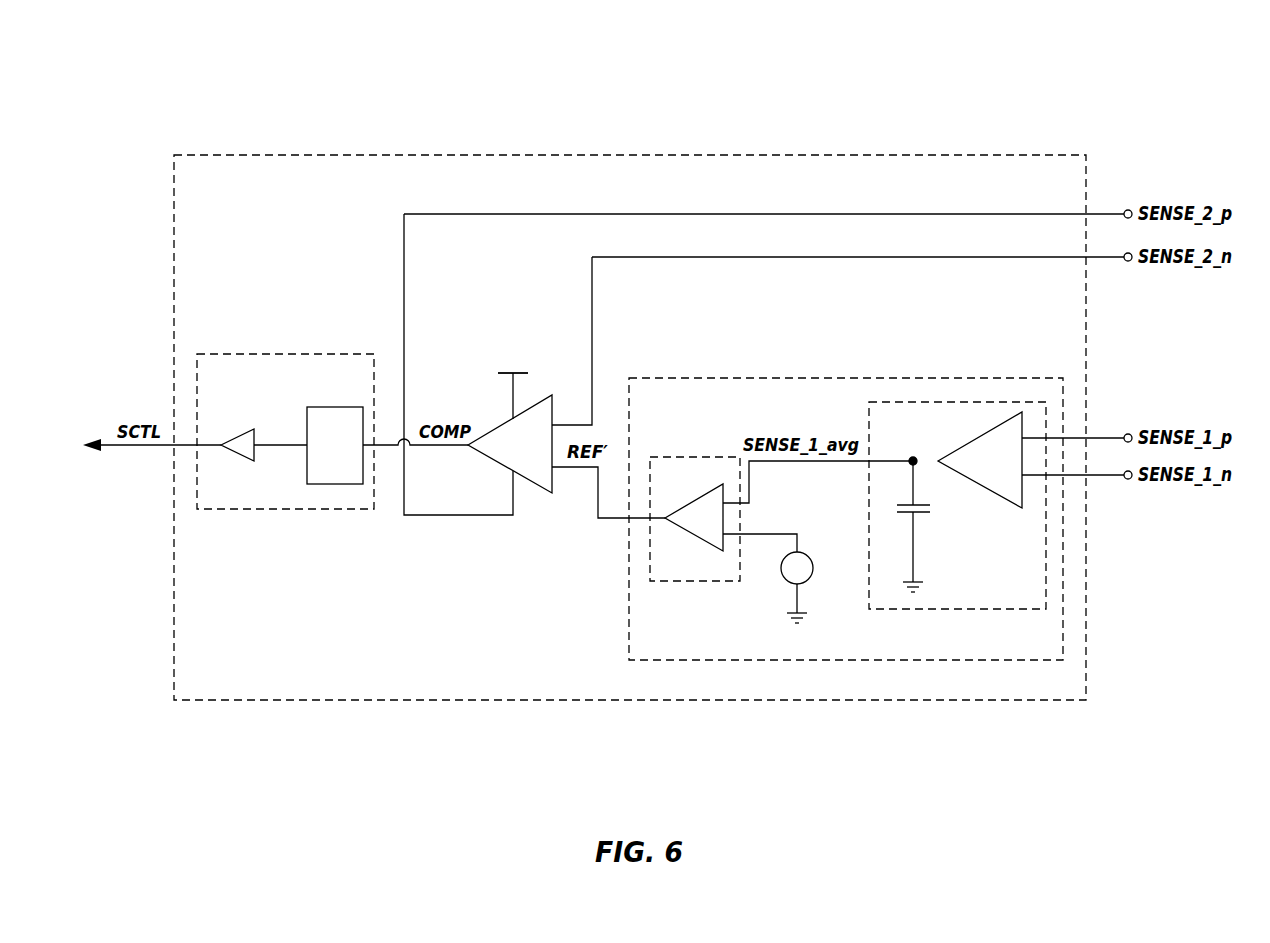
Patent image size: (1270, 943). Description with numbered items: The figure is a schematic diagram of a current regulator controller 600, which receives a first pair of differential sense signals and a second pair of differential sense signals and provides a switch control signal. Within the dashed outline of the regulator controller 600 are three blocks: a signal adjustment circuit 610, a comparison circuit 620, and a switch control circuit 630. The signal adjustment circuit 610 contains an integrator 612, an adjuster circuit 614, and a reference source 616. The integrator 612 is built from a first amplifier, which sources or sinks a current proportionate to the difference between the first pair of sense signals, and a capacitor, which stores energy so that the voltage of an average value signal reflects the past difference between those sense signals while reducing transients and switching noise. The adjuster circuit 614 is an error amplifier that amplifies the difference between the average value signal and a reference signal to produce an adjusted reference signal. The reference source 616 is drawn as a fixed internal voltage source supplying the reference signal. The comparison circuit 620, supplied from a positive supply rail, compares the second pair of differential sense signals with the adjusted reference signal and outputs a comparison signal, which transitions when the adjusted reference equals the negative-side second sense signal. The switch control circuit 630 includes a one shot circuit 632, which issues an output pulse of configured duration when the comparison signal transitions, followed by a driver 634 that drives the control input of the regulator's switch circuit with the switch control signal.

The current regulator controller 600 is at (992, 92).
The signal adjustment circuit 610 is at (833, 377).
The integrator 612 is at (957, 505).
The adjuster circuit 614 is at (695, 519).
The reference source 616 is at (807, 557).
The comparison circuit 620 is at (554, 396).
The switch control circuit 630 is at (375, 357).
The one shot circuit 632 is at (341, 408).
The driver 634 is at (243, 436).